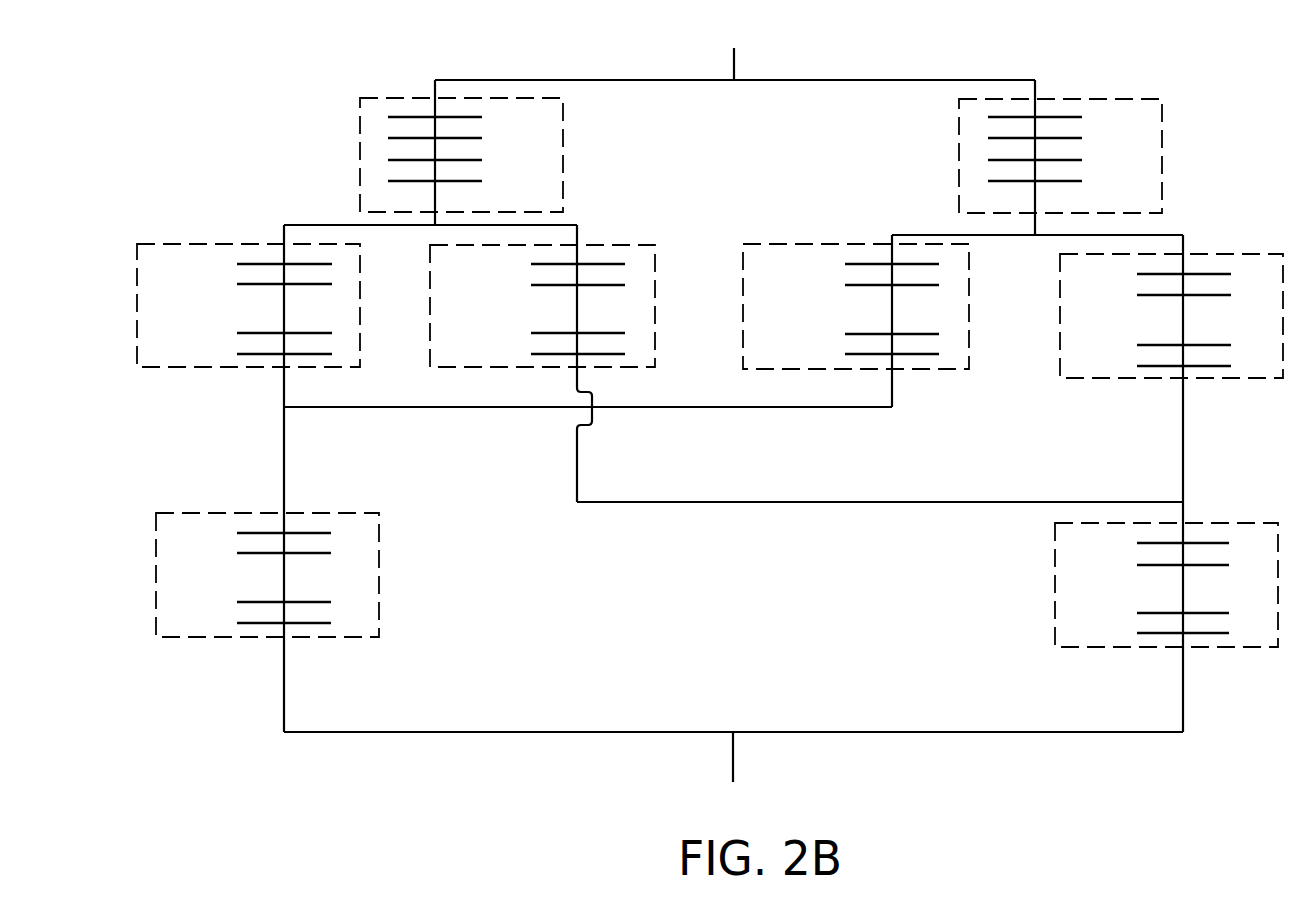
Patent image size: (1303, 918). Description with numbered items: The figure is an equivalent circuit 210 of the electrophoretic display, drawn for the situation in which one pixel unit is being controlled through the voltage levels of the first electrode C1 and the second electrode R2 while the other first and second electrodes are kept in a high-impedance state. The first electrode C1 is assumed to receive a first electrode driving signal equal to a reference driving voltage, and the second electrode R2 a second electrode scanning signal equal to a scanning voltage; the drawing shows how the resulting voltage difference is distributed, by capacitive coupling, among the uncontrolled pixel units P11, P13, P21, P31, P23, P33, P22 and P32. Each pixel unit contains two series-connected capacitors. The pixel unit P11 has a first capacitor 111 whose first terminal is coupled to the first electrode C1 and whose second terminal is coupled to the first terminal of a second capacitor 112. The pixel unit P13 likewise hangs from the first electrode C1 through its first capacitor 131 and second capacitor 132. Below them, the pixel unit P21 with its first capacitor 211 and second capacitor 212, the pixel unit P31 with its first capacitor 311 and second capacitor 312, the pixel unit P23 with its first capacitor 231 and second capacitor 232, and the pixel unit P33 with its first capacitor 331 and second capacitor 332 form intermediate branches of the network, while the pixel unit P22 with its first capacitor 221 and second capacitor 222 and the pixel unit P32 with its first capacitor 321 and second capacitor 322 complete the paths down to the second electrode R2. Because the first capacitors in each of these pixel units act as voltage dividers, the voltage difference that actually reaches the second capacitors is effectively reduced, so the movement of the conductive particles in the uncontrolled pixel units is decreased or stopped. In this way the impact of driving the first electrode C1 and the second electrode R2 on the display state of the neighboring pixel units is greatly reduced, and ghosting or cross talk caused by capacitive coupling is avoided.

The equivalent circuit 210 is at (1222, 797).
The first electrode C1 is at (734, 45).
The second electrode R2 is at (734, 776).
The pixel unit P11 is at (360, 147).
The first capacitor 111 is at (484, 128).
The second capacitor 112 is at (484, 170).
The pixel unit P13 is at (959, 147).
The first capacitor 131 is at (1084, 128).
The second capacitor 132 is at (1084, 170).
The pixel unit P21 is at (207, 367).
The first capacitor 211 is at (235, 341).
The second capacitor 212 is at (235, 275).
The pixel unit P31 is at (430, 335).
The first capacitor 311 is at (529, 341).
The second capacitor 312 is at (529, 275).
The pixel unit P23 is at (814, 242).
The first capacitor 231 is at (844, 341).
The second capacitor 232 is at (844, 275).
The pixel unit P33 is at (1105, 378).
The first capacitor 331 is at (1134, 351).
The second capacitor 332 is at (1134, 285).
The pixel unit P22 is at (207, 637).
The first capacitor 221 is at (235, 543).
The second capacitor 222 is at (235, 609).
The pixel unit P32 is at (1105, 647).
The first capacitor 321 is at (1134, 555).
The second capacitor 322 is at (1134, 619).